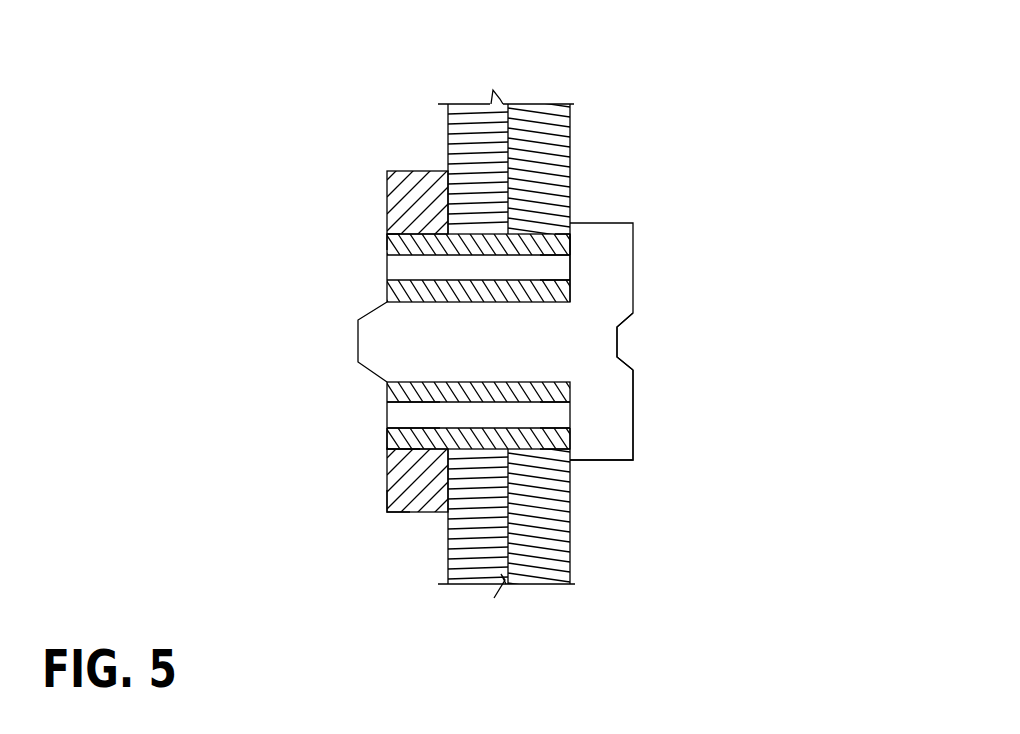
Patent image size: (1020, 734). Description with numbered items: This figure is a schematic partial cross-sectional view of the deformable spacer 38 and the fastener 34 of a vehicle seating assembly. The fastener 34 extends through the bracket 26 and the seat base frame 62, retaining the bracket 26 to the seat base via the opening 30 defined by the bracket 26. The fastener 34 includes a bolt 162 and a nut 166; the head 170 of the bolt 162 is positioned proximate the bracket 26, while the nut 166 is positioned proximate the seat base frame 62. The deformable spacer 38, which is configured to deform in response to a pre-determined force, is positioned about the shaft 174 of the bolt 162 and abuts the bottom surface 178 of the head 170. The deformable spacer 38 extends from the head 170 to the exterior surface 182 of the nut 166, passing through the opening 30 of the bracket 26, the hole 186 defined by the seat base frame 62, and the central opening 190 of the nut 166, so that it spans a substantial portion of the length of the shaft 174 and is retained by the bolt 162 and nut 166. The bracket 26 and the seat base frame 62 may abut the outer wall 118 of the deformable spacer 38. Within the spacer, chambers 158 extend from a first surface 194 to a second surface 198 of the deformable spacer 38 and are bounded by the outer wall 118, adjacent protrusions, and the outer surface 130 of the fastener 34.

The bracket 26 is at (542, 153).
The opening 30 is at (576, 235).
The fastener 34 is at (637, 263).
The deformable spacer 38 is at (383, 439).
The seat base frame 62 is at (471, 132).
The outer wall 118 is at (570, 443).
The outer surface 130 is at (488, 383).
The chambers 158 is at (410, 413).
The bolt 162 is at (548, 343).
The nut 166 is at (396, 502).
The head 170 is at (603, 392).
The shaft 174 is at (425, 338).
The bottom surface 178 is at (570, 277).
The exterior surface 182 is at (387, 475).
The hole 186 is at (470, 226).
The central opening 190 is at (383, 229).
The first surface 194 is at (570, 418).
The second surface 198 is at (387, 247).